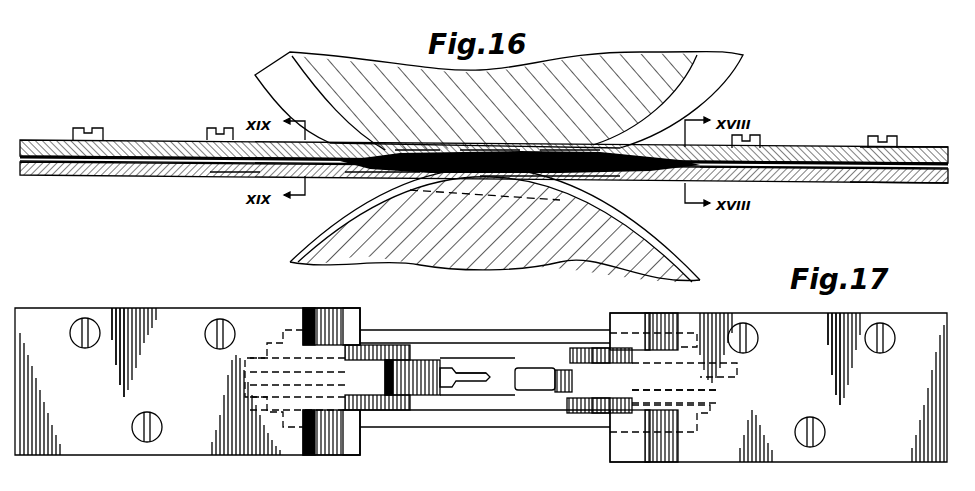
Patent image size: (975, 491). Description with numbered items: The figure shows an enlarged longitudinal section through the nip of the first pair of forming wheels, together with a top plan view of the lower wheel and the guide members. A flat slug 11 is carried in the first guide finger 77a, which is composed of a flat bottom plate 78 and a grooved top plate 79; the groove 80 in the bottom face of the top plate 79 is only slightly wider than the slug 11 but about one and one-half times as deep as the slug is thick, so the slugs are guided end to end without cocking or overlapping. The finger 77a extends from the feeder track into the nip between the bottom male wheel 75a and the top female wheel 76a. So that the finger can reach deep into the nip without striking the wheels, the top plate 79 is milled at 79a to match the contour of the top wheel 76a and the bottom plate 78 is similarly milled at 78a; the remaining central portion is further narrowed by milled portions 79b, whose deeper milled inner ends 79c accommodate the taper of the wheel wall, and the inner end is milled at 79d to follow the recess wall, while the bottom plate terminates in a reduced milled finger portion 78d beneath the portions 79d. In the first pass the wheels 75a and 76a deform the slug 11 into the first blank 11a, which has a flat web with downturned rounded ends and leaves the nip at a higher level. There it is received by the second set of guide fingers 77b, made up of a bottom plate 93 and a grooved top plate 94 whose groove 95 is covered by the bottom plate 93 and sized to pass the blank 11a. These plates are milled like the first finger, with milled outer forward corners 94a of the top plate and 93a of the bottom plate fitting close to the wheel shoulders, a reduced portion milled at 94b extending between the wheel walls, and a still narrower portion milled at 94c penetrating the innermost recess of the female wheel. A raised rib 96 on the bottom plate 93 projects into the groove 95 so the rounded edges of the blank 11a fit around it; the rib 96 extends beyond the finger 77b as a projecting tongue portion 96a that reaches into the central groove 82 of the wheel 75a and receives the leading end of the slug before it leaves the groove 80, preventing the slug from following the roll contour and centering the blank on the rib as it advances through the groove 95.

In FIG. 16, the slug 11 is at (641, 174).
In FIG. 16, the first blank 11a is at (415, 152).
In FIG. 16, the bottom male wheel 75a is at (668, 252).
In FIG. 17, the bottom male wheel 75a is at (742, 398).
In FIG. 16, the top female wheel 76a is at (540, 72).
In FIG. 16, the first guide finger 77a is at (824, 147).
In FIG. 17, the first guide finger 77a is at (908, 330).
In FIG. 16, the second set of guide fingers 77b is at (90, 127).
In FIG. 17, the second set of guide fingers 77b is at (152, 328).
In FIG. 16, the bottom plate 78 is at (866, 185).
In FIG. 17, the milled cut 78a is at (640, 322).
In FIG. 16, the reduced milled finger portion 78d is at (560, 180).
In FIG. 16, the grooved top plate 79 is at (905, 147).
In FIG. 17, the grooved top plate 79 is at (752, 464).
In FIG. 17, the milled cut 79a is at (670, 315).
In FIG. 17, the milled portions 79b is at (605, 352).
In FIG. 17, the deeper milled inner ends 79c is at (575, 414).
In FIG. 16, the milled inner end 79d is at (560, 148).
In FIG. 17, the milled inner end 79d is at (535, 391).
In FIG. 16, the groove 80 is at (776, 169).
In FIG. 17, the central groove 82 is at (500, 373).
In FIG. 16, the bottom plate 93 is at (88, 176).
In FIG. 17, the milled outer forward corner 93a is at (350, 318).
In FIG. 16, the grooved top plate 94 is at (160, 140).
In FIG. 17, the grooved top plate 94 is at (48, 322).
In FIG. 17, the milled outer forward corner 94a is at (325, 308).
In FIG. 17, the milled portion 94b is at (370, 346).
In FIG. 16, the milled portion 94c is at (400, 172).
In FIG. 17, the milled portion 94c is at (420, 362).
In FIG. 16, the groove 95 is at (133, 172).
In FIG. 16, the raised rib 96 is at (228, 176).
In FIG. 17, the raised rib 96 is at (448, 388).
In FIG. 16, the projecting tongue portion 96a is at (478, 158).
In FIG. 17, the projecting tongue portion 96a is at (480, 384).